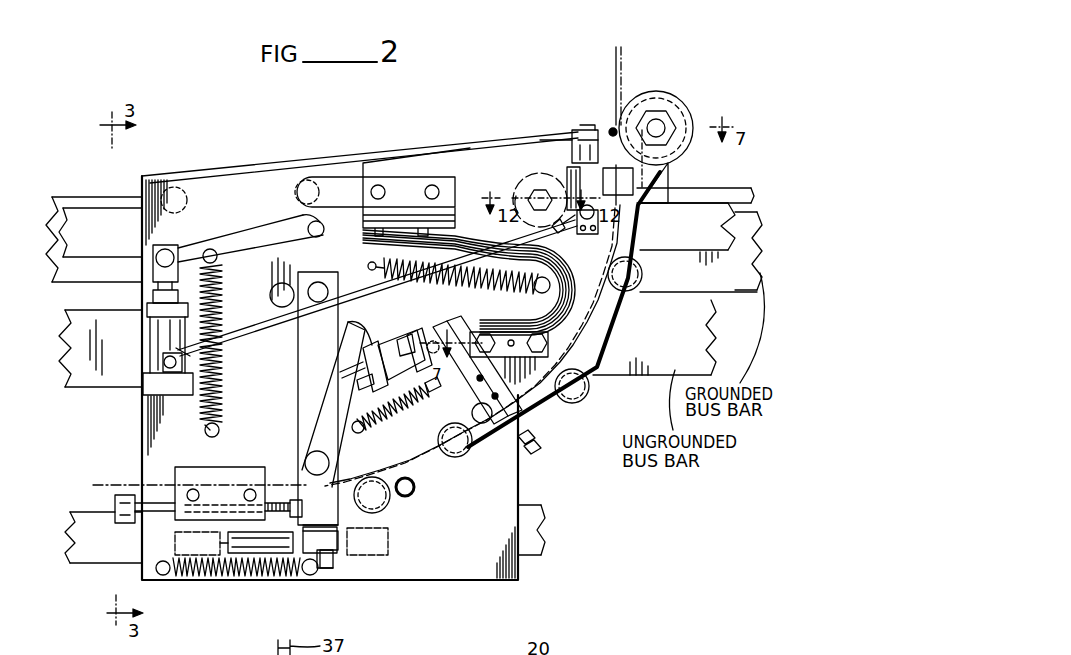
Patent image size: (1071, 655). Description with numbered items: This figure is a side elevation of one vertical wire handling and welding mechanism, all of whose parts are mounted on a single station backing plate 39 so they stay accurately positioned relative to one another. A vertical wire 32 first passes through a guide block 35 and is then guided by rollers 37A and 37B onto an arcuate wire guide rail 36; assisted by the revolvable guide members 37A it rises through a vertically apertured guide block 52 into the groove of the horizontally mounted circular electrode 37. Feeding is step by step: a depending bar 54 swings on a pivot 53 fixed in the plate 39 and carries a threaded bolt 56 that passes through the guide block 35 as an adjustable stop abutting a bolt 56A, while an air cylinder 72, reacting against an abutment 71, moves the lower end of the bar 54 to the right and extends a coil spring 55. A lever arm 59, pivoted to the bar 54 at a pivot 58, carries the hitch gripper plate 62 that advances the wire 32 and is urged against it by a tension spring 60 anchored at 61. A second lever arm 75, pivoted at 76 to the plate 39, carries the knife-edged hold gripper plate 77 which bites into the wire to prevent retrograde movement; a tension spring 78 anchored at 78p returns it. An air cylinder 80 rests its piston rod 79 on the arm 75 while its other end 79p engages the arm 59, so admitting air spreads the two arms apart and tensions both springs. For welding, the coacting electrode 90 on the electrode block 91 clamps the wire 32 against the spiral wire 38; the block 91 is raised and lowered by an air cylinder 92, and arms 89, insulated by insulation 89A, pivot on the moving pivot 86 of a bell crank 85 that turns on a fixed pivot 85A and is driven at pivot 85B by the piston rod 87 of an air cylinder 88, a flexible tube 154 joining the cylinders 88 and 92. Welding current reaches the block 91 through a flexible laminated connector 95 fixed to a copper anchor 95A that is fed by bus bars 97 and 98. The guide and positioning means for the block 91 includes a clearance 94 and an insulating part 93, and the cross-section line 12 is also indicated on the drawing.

The bolt assembly 12 is at (575, 219).
The wire 32 is at (623, 63).
The guide block 35 is at (232, 496).
The arcuate wire guide rail 36 is at (552, 412).
The circular electrode 37 is at (673, 117).
The rollers 37A is at (636, 283).
The rollers 37B is at (442, 449).
The spiral wire 38 is at (613, 130).
The station backing plate 39 is at (265, 401).
The guide block 52 is at (634, 182).
The pivot 53 is at (316, 283).
The depending bar 54 is at (303, 397).
The coil spring 55 is at (205, 577).
The threaded bolt 56 is at (158, 508).
The bolt 56A is at (290, 500).
The pivot 58 is at (317, 452).
The lever arm 59 is at (298, 352).
The tension spring 60 is at (450, 282).
The spring anchor 61 is at (540, 287).
The hitch gripper plate 62 is at (338, 450).
The abutment 71 is at (208, 555).
The air cylinder 72 is at (253, 553).
The lever arm 75 is at (462, 388).
The pivot 76 is at (484, 392).
The hold gripper plate 77 is at (490, 424).
The tension spring 78 is at (396, 412).
The spring anchor 78p is at (388, 385).
The piston rod 79 is at (415, 338).
The cylinder end 79p is at (357, 382).
The air cylinder 80 is at (388, 350).
The bell crank 85 is at (248, 235).
The fixed pivot 85A is at (317, 237).
The pivot 85B is at (168, 255).
The moving pivot 86 is at (300, 189).
The piston rod 87 is at (158, 298).
The air cylinder 88 is at (158, 342).
The arms 89 is at (415, 186).
The insulation 89A is at (407, 172).
The coacting electrode 90 is at (607, 130).
The electrode block 91 is at (534, 178).
The air cylinder 92 is at (620, 218).
The hex post 93 is at (547, 190).
The clearance 94 is at (516, 196).
The flexible laminated connector member 95 is at (565, 272).
The anchor 95A is at (595, 357).
The bus bar 97 is at (665, 338).
The bus bar 98 is at (752, 261).
The flexible tube 154 is at (240, 335).